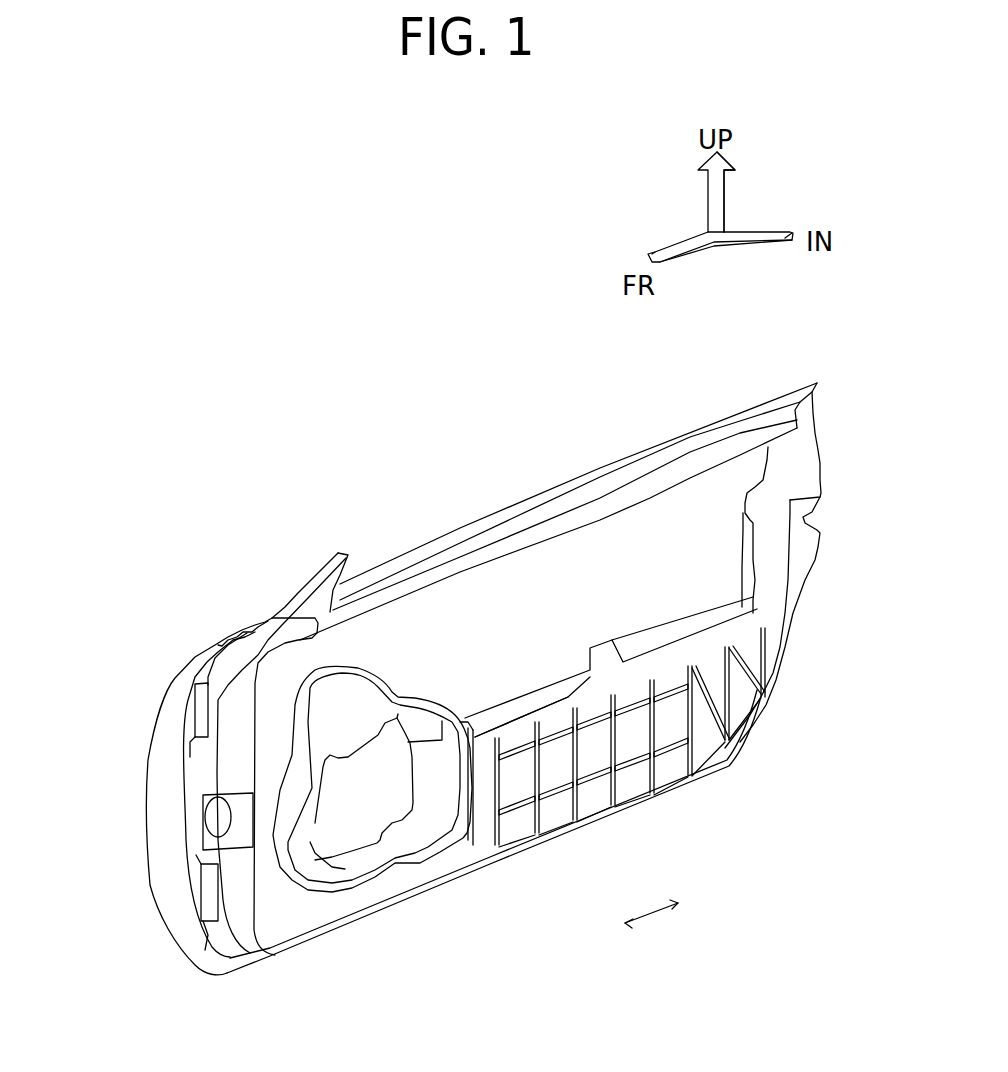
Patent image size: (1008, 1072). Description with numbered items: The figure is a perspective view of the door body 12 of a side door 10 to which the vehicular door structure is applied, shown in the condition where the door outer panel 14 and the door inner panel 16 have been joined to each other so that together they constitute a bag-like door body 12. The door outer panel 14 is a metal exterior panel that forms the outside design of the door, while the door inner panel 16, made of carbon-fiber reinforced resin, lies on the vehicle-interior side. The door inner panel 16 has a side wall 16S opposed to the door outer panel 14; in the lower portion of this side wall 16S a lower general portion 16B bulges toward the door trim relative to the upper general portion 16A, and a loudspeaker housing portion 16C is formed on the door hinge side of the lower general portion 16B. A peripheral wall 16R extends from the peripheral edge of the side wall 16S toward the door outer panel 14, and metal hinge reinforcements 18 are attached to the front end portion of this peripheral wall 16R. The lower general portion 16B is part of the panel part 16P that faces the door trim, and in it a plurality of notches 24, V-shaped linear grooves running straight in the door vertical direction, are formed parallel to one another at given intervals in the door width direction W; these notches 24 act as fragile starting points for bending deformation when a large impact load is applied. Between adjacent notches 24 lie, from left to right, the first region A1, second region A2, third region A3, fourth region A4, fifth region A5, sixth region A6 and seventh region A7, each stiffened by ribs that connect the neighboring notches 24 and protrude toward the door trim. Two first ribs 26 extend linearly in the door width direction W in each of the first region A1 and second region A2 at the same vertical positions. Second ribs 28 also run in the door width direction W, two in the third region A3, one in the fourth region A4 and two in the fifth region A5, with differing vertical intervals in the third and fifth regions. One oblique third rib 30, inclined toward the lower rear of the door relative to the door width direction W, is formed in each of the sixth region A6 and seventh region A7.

The side door 10 is at (548, 356).
The door body 12 is at (503, 456).
The door outer panel 14 is at (148, 692).
The door inner panel 16 is at (410, 901).
The upper general portion 16A is at (549, 548).
The lower general portion 16B is at (625, 648).
The loudspeaker housing portion 16C is at (345, 837).
The panel part 16P is at (495, 885).
The peripheral wall 16R is at (207, 763).
The side wall 16S is at (490, 882).
The hinge reinforcements 18 is at (197, 715).
The notches 24 is at (572, 712).
The first ribs 26 is at (518, 867).
The second ribs 28 is at (593, 735).
The third ribs 30 is at (712, 695).
The first region A1 is at (515, 850).
The second region A2 is at (552, 843).
The third region A3 is at (590, 823).
The fourth region A4 is at (628, 810).
The fifth region A5 is at (672, 775).
The sixth region A6 is at (710, 752).
The seventh region A7 is at (740, 705).
The door width direction W is at (655, 915).